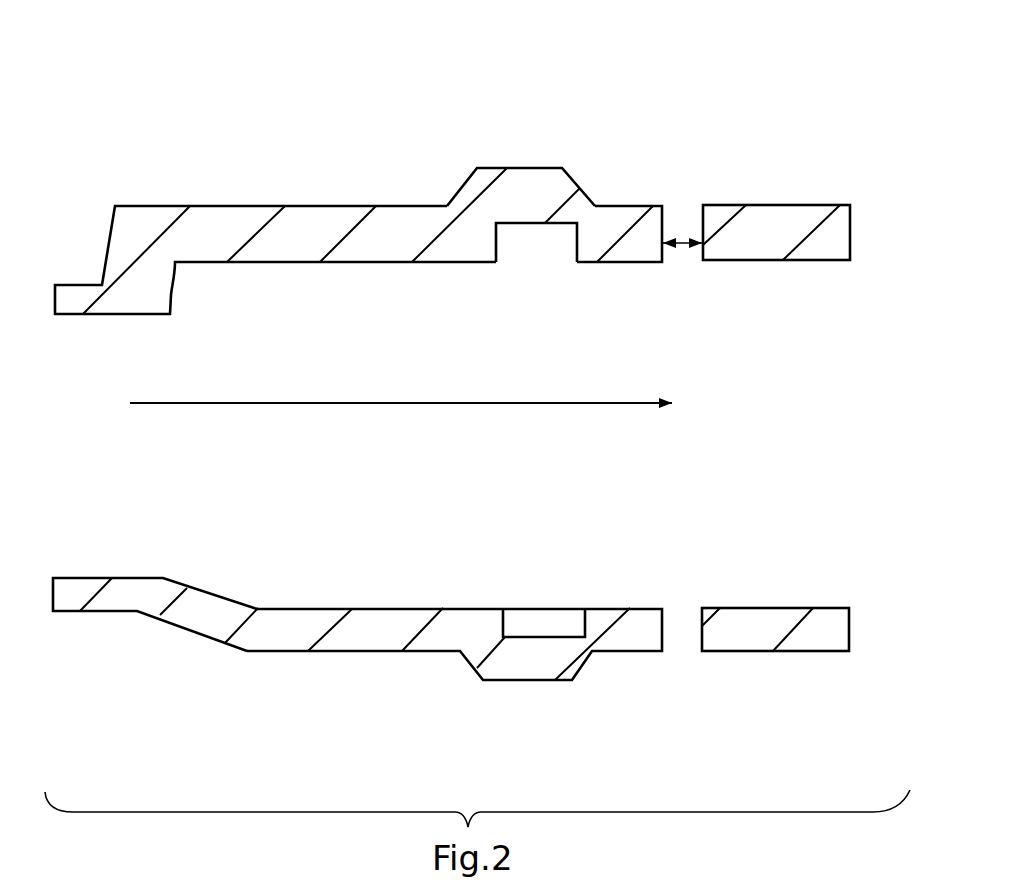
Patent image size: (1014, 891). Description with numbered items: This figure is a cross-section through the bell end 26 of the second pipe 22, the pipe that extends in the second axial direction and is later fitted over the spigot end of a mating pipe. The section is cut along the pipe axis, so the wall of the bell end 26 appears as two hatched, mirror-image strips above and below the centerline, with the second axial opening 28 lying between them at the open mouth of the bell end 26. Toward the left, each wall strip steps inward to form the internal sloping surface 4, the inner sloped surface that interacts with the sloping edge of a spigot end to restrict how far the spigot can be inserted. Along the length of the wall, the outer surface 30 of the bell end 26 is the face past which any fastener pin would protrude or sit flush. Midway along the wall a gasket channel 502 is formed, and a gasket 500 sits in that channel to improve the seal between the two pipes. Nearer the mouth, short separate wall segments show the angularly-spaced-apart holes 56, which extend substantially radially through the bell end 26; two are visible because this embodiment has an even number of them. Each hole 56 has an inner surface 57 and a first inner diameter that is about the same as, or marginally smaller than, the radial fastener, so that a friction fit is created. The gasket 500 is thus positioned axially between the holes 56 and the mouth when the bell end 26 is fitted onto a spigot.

The second pipe 22 is at (635, 102).
The bell end 26 is at (200, 195).
The outer surface 30 is at (308, 195).
The gasket channel 502 is at (520, 195).
The inner surface 57 is at (683, 187).
The angularly-spaced-apart holes 56 is at (728, 178).
The internal sloping surface 4 is at (188, 287).
The second axial opening 28 is at (795, 392).
The gasket 500 is at (457, 598).